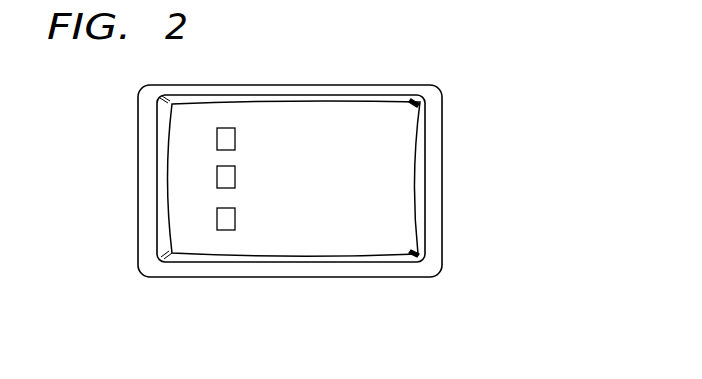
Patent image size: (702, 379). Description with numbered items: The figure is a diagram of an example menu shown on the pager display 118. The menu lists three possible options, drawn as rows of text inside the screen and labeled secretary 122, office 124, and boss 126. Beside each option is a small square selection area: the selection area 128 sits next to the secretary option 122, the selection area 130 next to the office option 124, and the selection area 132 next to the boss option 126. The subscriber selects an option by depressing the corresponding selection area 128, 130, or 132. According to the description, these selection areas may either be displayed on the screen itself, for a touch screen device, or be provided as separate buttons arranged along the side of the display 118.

The pager display 118 is at (293, 245).
The secretary option 122 is at (372, 137).
The office option 124 is at (332, 183).
The boss option 126 is at (313, 227).
The selection area 128 is at (217, 142).
The selection area 130 is at (217, 174).
The selection area 132 is at (217, 222).